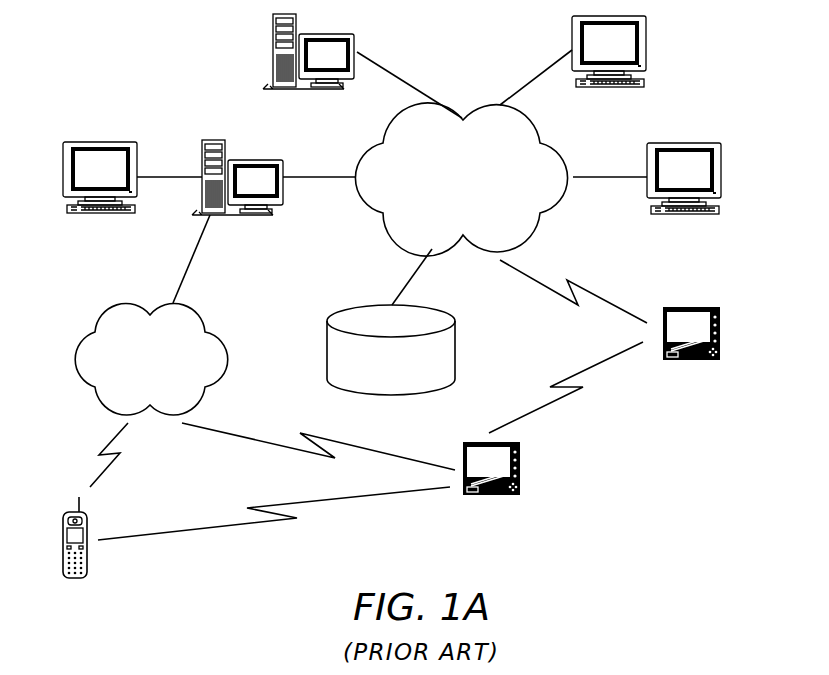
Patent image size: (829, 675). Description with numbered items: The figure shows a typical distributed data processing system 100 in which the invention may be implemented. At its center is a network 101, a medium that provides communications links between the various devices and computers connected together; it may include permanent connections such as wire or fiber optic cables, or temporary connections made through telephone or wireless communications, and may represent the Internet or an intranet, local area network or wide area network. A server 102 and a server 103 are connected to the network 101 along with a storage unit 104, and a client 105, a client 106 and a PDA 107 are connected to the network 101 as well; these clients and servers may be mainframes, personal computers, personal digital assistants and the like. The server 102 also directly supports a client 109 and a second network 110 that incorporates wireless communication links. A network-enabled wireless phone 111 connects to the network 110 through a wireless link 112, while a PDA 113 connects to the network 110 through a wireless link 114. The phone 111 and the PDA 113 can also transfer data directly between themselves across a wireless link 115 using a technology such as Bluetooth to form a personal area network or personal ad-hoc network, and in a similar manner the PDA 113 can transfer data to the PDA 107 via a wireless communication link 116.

The distributed data processing system 100 is at (125, 63).
The network 101 is at (482, 201).
The server 102 is at (207, 140).
The server 103 is at (273, 54).
The storage unit 104 is at (327, 353).
The client 105 is at (647, 50).
The client 106 is at (721, 177).
The PDA 107 is at (721, 331).
The client 109 is at (98, 142).
The network 110 is at (167, 382).
The network-enabled phone 111 is at (87, 555).
The wireless link 112 is at (116, 473).
The PDA 113 is at (518, 467).
The wireless link 114 is at (233, 432).
The wireless link 115 is at (210, 528).
The wireless communication link 116 is at (543, 403).